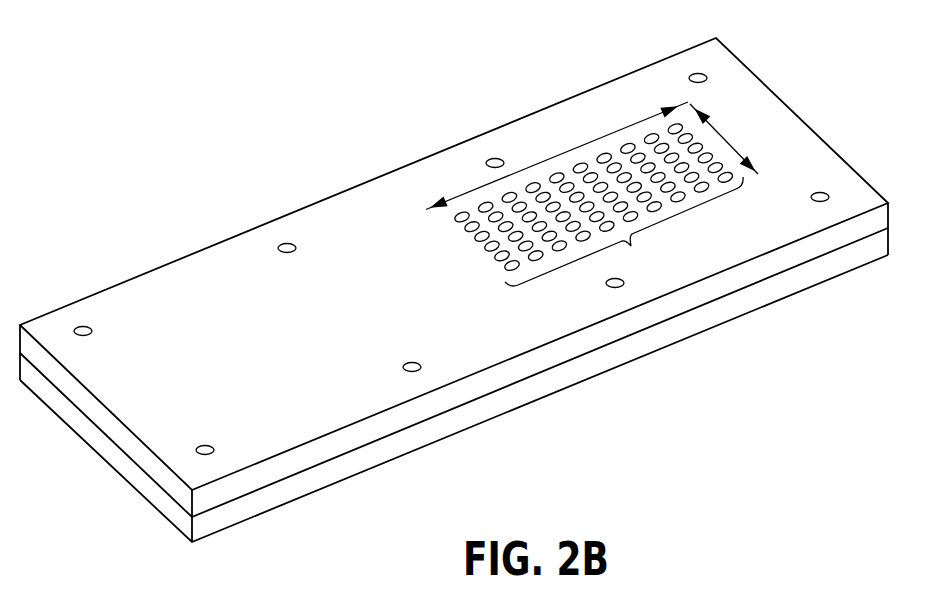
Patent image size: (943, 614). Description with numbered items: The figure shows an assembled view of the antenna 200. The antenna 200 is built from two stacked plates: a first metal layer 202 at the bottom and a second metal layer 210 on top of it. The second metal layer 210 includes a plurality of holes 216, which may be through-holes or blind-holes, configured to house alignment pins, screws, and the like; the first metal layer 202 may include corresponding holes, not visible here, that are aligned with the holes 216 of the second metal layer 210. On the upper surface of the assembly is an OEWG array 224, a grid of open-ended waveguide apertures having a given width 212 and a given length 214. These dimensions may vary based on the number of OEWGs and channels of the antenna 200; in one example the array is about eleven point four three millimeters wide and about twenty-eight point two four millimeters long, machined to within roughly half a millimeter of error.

The antenna 200 is at (200, 110).
The first metal layer 202 is at (160, 498).
The second metal layer 210 is at (152, 472).
The width 212 is at (727, 142).
The length 214 is at (560, 153).
The holes 216 is at (81, 327).
The OEWG array 224 is at (598, 204).